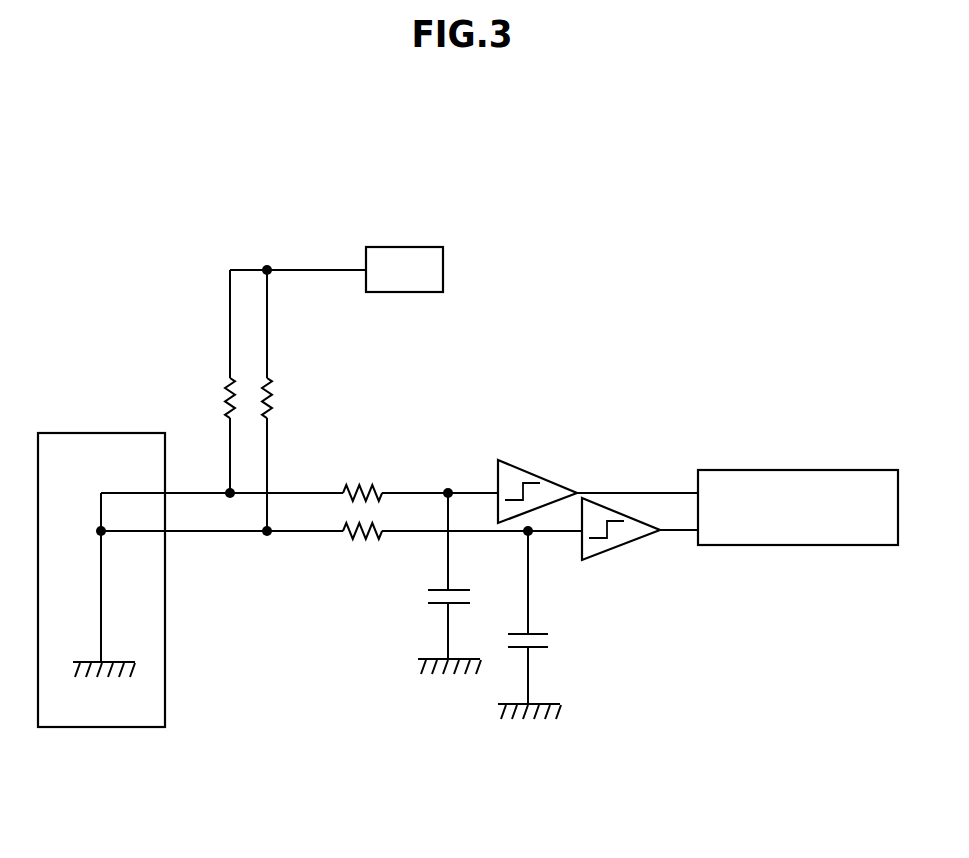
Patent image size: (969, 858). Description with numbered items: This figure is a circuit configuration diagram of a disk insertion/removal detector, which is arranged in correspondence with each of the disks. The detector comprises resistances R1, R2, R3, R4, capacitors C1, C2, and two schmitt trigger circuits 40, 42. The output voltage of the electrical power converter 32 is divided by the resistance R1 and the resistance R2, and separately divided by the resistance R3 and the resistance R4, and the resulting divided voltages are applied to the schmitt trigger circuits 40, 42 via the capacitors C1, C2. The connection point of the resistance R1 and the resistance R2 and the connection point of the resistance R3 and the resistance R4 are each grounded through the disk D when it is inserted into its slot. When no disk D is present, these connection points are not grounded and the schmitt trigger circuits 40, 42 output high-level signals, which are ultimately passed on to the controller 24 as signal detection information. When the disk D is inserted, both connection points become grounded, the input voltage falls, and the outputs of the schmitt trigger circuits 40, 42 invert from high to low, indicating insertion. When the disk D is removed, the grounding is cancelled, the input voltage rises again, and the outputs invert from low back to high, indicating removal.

The disk D is at (100, 432).
The electrical power converter 32 is at (408, 247).
The resistance R1 is at (209, 398).
The resistance R2 is at (362, 478).
The resistance R3 is at (288, 398).
The resistance R4 is at (362, 549).
The capacitor C1 is at (435, 583).
The capacitor C2 is at (543, 625).
The schmitt trigger circuit 40 is at (534, 468).
The schmitt trigger circuit 42 is at (620, 547).
The controller 24 is at (805, 470).